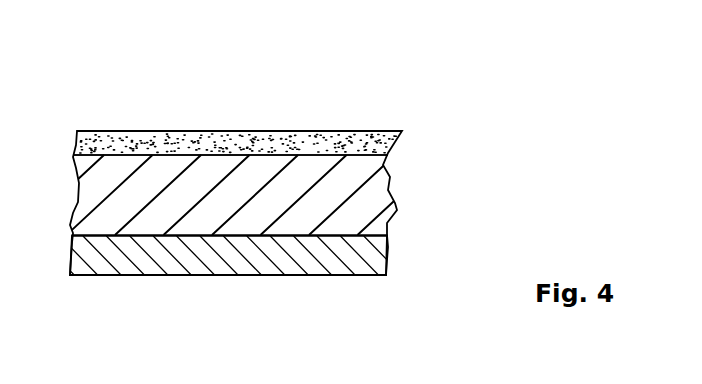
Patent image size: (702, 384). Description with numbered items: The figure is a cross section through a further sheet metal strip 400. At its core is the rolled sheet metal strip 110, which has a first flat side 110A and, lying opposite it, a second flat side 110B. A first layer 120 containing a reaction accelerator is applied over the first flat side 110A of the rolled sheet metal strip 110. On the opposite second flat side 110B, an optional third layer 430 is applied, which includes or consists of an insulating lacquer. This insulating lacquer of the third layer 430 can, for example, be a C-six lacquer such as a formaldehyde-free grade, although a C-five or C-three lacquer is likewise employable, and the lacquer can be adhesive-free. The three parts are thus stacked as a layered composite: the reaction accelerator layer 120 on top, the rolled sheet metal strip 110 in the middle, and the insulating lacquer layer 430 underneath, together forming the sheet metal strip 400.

The sheet metal strip 400 is at (465, 53).
The rolled sheet metal strip 110 is at (392, 185).
The first flat side 110A is at (191, 151).
The second flat side 110B is at (104, 237).
The first layer 120 is at (343, 131).
The third layer 430 is at (318, 263).